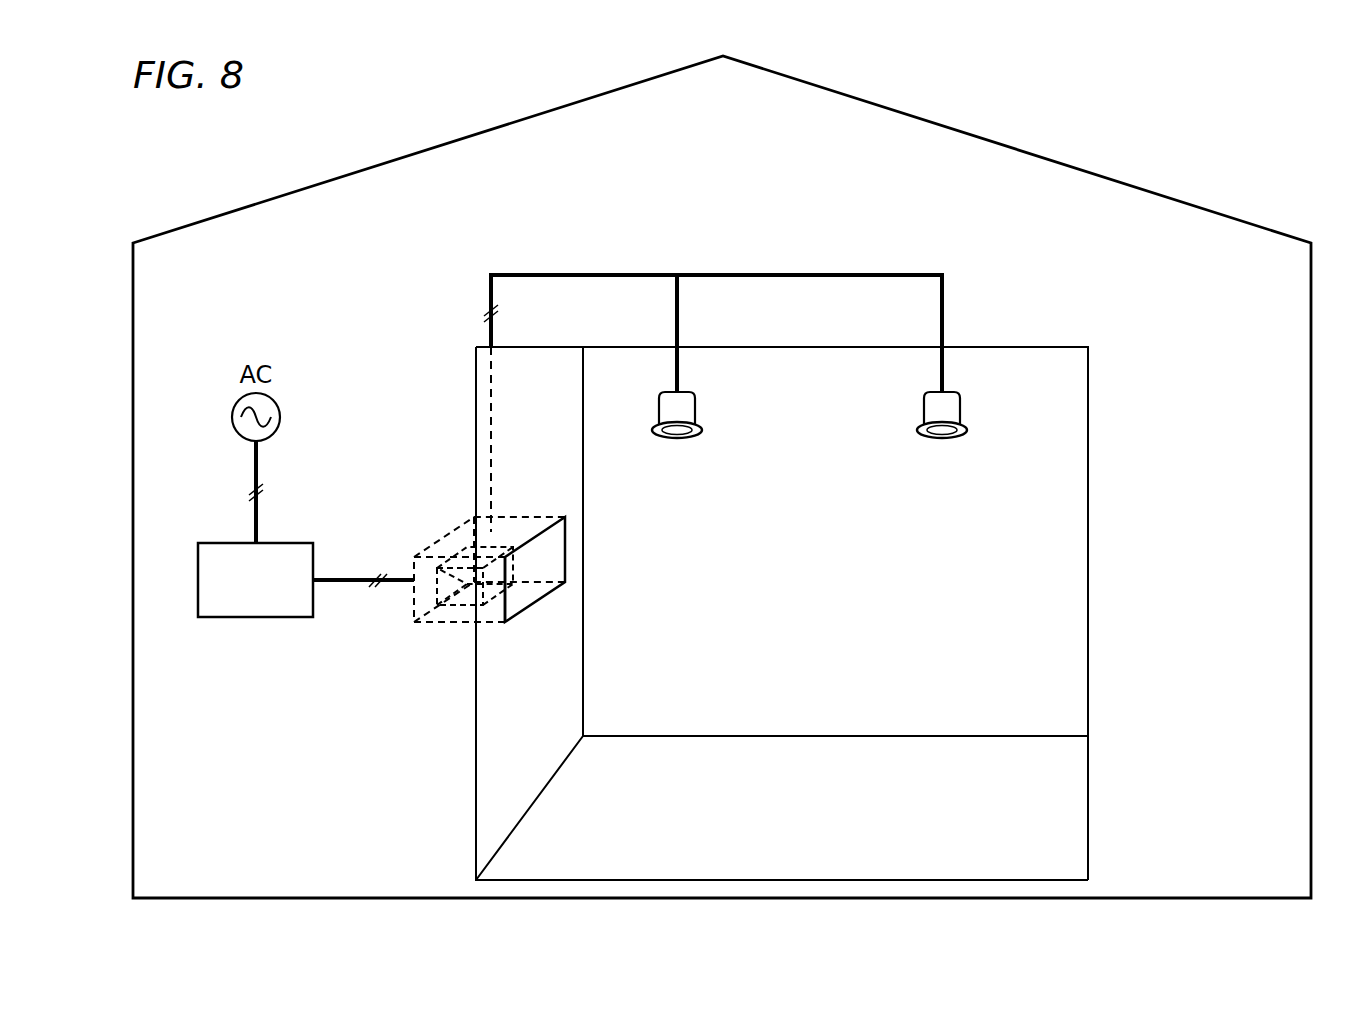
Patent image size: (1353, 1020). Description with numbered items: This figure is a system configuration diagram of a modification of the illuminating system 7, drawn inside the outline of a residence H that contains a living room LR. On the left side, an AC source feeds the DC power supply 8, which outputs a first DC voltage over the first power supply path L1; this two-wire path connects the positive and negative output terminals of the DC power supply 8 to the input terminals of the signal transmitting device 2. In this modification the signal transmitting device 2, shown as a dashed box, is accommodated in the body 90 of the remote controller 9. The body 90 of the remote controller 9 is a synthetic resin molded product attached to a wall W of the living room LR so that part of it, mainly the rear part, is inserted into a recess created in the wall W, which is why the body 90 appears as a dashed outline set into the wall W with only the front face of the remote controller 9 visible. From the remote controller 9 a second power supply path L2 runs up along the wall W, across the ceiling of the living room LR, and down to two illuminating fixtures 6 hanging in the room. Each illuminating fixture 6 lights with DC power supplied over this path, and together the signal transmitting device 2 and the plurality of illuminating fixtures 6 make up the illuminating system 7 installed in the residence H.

The residence H is at (975, 133).
The living room LR is at (1068, 498).
The wall W is at (503, 762).
The illuminating system 7 is at (437, 345).
The second power supply path L2 is at (947, 310).
The illuminating fixture 6 is at (683, 440).
The DC power supply 8 is at (250, 617).
The first power supply path L1 is at (347, 577).
The remote controller 9 is at (561, 554).
The signal transmitting device 2 is at (462, 590).
The body 90 is at (519, 618).